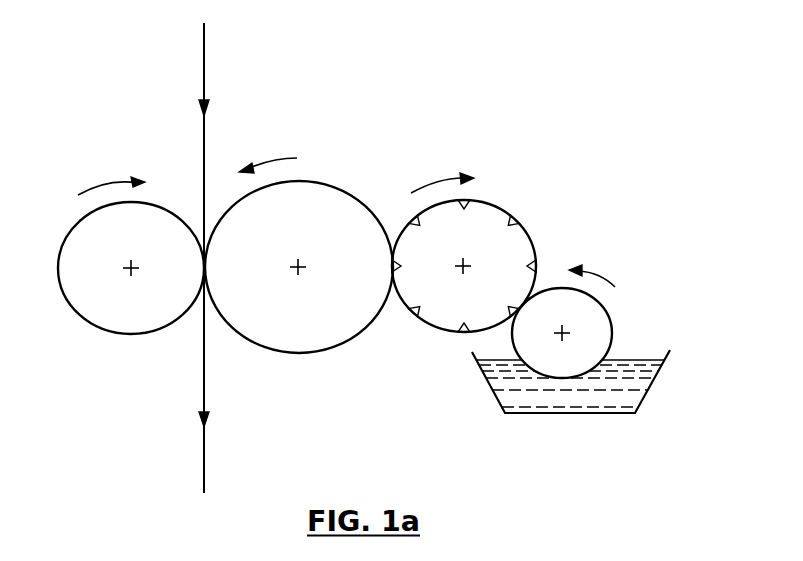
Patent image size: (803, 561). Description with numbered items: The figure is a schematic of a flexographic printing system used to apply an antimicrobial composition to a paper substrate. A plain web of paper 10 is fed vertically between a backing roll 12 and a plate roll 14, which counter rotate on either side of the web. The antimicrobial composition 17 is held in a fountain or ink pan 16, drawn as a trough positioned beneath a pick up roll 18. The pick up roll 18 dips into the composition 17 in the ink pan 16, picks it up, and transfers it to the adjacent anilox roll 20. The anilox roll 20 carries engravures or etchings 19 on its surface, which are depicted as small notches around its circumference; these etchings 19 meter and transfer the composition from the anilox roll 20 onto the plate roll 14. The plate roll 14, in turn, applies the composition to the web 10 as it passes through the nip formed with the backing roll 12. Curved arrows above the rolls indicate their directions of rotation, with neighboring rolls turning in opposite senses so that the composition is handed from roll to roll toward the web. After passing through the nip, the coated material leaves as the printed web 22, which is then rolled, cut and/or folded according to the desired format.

The plain web of paper 10 is at (204, 58).
The backing roll 12 is at (103, 331).
The plate roll 14 is at (343, 345).
The fountain or ink pan 16 is at (655, 383).
The antimicrobial composition 17 is at (588, 398).
The pick up roll 18 is at (612, 320).
The engravures or etchings 19 is at (405, 266).
The anilox roll 20 is at (528, 228).
The printed web 22 is at (204, 462).